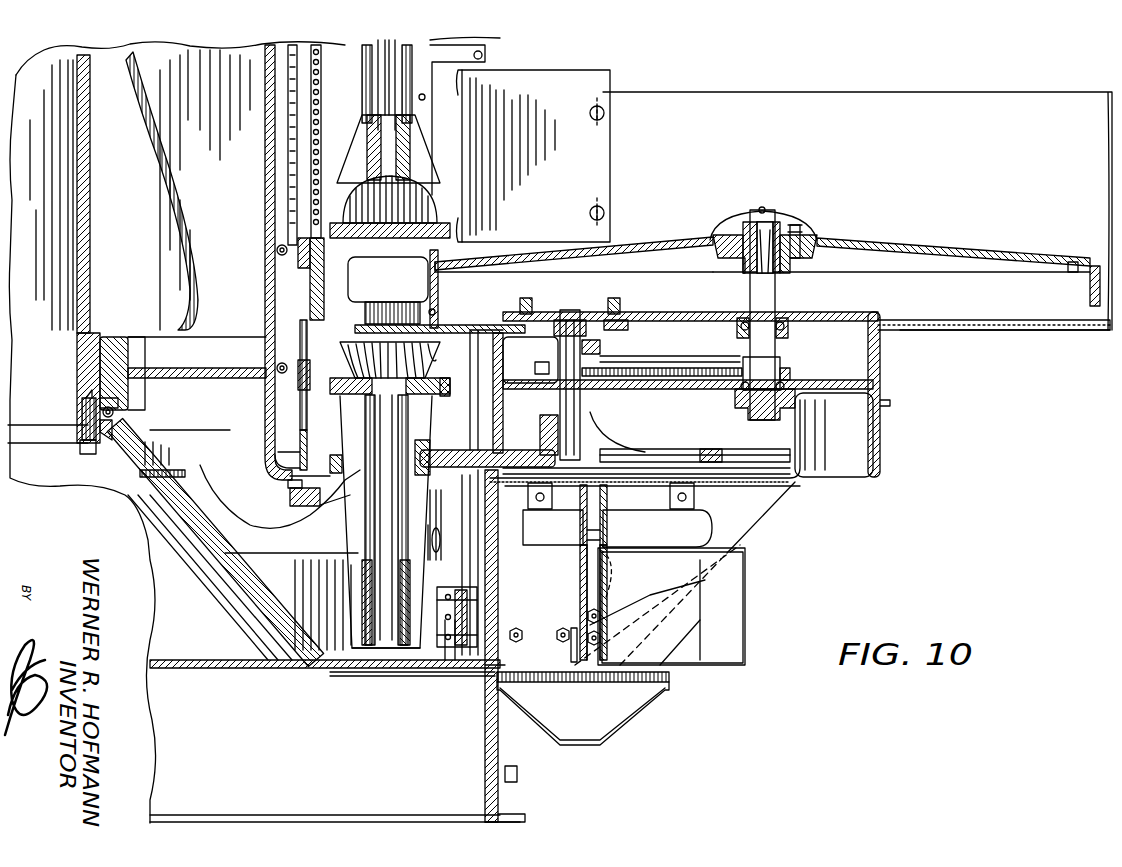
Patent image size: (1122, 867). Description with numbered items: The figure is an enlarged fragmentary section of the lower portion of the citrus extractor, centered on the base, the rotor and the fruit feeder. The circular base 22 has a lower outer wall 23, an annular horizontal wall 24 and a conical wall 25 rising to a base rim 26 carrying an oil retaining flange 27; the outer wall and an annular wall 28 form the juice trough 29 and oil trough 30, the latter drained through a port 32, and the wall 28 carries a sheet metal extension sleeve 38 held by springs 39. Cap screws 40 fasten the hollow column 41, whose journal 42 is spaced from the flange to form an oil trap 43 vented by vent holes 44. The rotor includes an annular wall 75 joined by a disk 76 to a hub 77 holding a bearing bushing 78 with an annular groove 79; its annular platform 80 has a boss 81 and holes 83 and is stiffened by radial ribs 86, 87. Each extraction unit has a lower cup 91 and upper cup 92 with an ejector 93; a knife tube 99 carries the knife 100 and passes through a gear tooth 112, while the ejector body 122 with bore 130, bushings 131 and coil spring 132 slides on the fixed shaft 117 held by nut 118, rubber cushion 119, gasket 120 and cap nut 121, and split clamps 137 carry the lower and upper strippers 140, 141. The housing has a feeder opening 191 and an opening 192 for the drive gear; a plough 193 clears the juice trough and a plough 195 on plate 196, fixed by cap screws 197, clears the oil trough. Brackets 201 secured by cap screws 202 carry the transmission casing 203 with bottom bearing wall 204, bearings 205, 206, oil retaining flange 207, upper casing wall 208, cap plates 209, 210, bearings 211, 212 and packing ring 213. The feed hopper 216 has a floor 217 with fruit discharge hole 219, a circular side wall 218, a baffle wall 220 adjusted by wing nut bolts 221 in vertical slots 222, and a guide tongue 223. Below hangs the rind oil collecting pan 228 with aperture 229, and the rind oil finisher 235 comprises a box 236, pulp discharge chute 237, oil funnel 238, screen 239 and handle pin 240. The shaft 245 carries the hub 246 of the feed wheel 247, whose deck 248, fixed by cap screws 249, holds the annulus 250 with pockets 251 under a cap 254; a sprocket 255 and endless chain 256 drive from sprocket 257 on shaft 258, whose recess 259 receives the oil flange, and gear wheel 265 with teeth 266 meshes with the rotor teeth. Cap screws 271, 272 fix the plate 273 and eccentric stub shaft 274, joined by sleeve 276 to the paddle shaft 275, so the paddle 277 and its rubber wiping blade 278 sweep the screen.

The circular base 22 is at (255, 603).
The lower outer wall 23 is at (485, 752).
The annular horizontal wall 24 is at (410, 665).
The conical wall 25 is at (230, 560).
The base rim 26 is at (82, 418).
The annular oil retaining flange 27 is at (115, 412).
The annular wall 28 is at (420, 622).
The annular juice trough 29 is at (340, 668).
The annular oil trough 30 is at (450, 655).
The port 32 is at (480, 618).
The sheet metal extension sleeve 38 is at (439, 525).
The springs 39 is at (436, 560).
The cap screws 40 is at (88, 440).
The hollow column 41 is at (80, 238).
The journal 42 is at (100, 366).
The annular oil trap 43 is at (112, 428).
The vent holes 44 is at (92, 455).
The annular wall 75 is at (265, 155).
The disk 76 is at (204, 368).
The hub 77 is at (135, 360).
The bearing bushing 78 is at (108, 337).
The annular groove 79 is at (120, 400).
The annular platform 80 is at (322, 506).
The annular boss 81 is at (352, 495).
The holes 83 is at (292, 477).
The radial ribs 86 is at (140, 86).
The radial ribs 87 is at (196, 455).
The lower cup 91 is at (440, 357).
The upper cups 92 is at (438, 210).
The ejector 93 is at (296, 260).
The knife tube 99 is at (308, 430).
The circular knife 100 is at (372, 394).
The gear tooth 112 is at (410, 445).
The fixed shaft 117 is at (300, 420).
The nut 118 is at (339, 458).
The rubber cushion 119 is at (285, 448).
The gasket 120 is at (290, 485).
The cap nut 121 is at (292, 500).
The tubular ejector body 122 is at (296, 306).
The bore 130 is at (300, 326).
The bushings 131 is at (298, 252).
The coil spring 132 is at (288, 180).
The split clamps 137 is at (278, 246).
The lower stripper 140 is at (450, 388).
The upper stripper 141 is at (452, 230).
The feeder opening 191 is at (440, 105).
The opening 192 is at (476, 430).
The plough 193 is at (352, 548).
The plough 195 is at (442, 640).
The plate 196 is at (472, 558).
The cap screws 197 is at (480, 497).
The brackets 201 is at (755, 510).
The cap screws 202 is at (514, 745).
The feeder transmission casing 203 is at (882, 357).
The horizontal bottom bearing wall 204 is at (635, 390).
The bearing 205 is at (500, 390).
The bearing 206 is at (792, 395).
The oil retaining flange 207 is at (598, 372).
The upper casing wall 208 is at (660, 304).
The cap plate 209 is at (575, 312).
The cap plate 210 is at (835, 312).
The bearing 211 is at (526, 300).
The bearing 212 is at (788, 318).
The packing ring 213 is at (746, 314).
The feed hopper 216 is at (1025, 325).
The floor 217 is at (1080, 332).
The circular side wall 218 is at (925, 100).
The fruit discharge hole 219 is at (450, 325).
The baffle wall 220 is at (585, 145).
The wing nut bolts 221 is at (604, 113).
The vertical slots 222 is at (600, 100).
The guide tongue 223 is at (336, 300).
The rind oil collecting pan 228 is at (795, 455).
The aperture 229 is at (610, 488).
The rind oil finisher 235 is at (748, 565).
The semi-cylindrical box 236 is at (645, 555).
The pulp discharge chute 237 is at (735, 612).
The oil funnel 238 is at (520, 775).
The screen 239 is at (655, 650).
The pin 240 is at (580, 640).
The shaft 245 is at (775, 343).
The hub 246 is at (780, 235).
The feed wheel 247 is at (895, 240).
The deck 248 is at (950, 250).
The cap screws 249 is at (802, 228).
The annulus 250 is at (1080, 262).
The pockets 251 is at (405, 275).
The cap 254 is at (722, 215).
The sprocket 255 is at (790, 372).
The endless chain 256 is at (670, 372).
The sprocket 257 is at (600, 348).
The shaft 258 is at (560, 348).
The concentric recess 259 is at (548, 366).
The gear wheel 265 is at (615, 440).
The teeth 266 is at (432, 450).
The cap screws 271 is at (580, 500).
The cap screws 272 is at (599, 511).
The plate 273 is at (508, 450).
The eccentric stub shaft 274 is at (612, 500).
The paddle shaft 275 is at (596, 580).
The sleeve 276 is at (580, 532).
The paddle 277 is at (555, 620).
The rubber screen wiping blade 278 is at (555, 627).